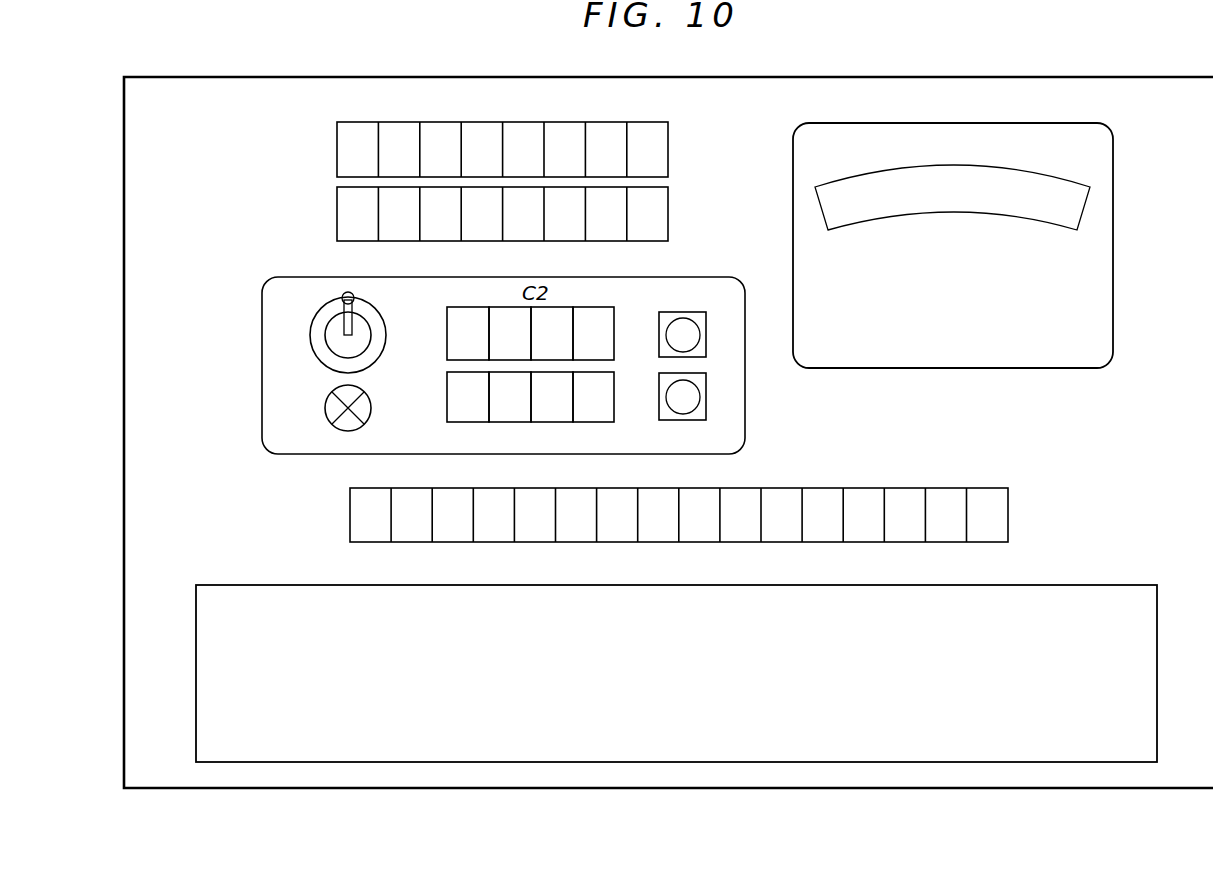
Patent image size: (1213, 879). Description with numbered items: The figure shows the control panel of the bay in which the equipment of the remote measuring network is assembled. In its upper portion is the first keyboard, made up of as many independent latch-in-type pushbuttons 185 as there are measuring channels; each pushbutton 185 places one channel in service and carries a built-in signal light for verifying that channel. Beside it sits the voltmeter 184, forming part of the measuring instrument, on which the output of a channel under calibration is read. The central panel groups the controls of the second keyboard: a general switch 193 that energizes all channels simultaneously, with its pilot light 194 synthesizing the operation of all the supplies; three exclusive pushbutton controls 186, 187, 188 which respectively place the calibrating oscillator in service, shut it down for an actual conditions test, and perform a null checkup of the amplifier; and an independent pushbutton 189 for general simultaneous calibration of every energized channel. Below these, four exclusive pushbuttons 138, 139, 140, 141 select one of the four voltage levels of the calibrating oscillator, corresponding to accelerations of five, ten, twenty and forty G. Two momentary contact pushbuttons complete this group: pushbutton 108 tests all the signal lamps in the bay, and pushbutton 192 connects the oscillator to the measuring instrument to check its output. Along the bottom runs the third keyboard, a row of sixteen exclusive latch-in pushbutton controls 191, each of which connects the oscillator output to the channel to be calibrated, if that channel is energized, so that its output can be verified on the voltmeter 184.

The latch-in-type pushbuttons 185 is at (333, 155).
The voltmeter 184 is at (962, 282).
The general switch 193 is at (325, 335).
The pilot light 194 is at (326, 402).
The pushbutton control 186 is at (447, 337).
The pushbutton control 187 is at (500, 318).
The pushbutton control 188 is at (552, 318).
The independent pushbutton 189 is at (603, 318).
The exclusive pushbutton 138 is at (458, 416).
The exclusive pushbutton 139 is at (503, 410).
The exclusive pushbutton 140 is at (548, 411).
The exclusive pushbutton 141 is at (590, 412).
The momentary contact pushbutton control 108 is at (720, 300).
The momentary contact pushbutton 192 is at (689, 389).
The latch-in-type pushbutton controls 191 is at (585, 543).